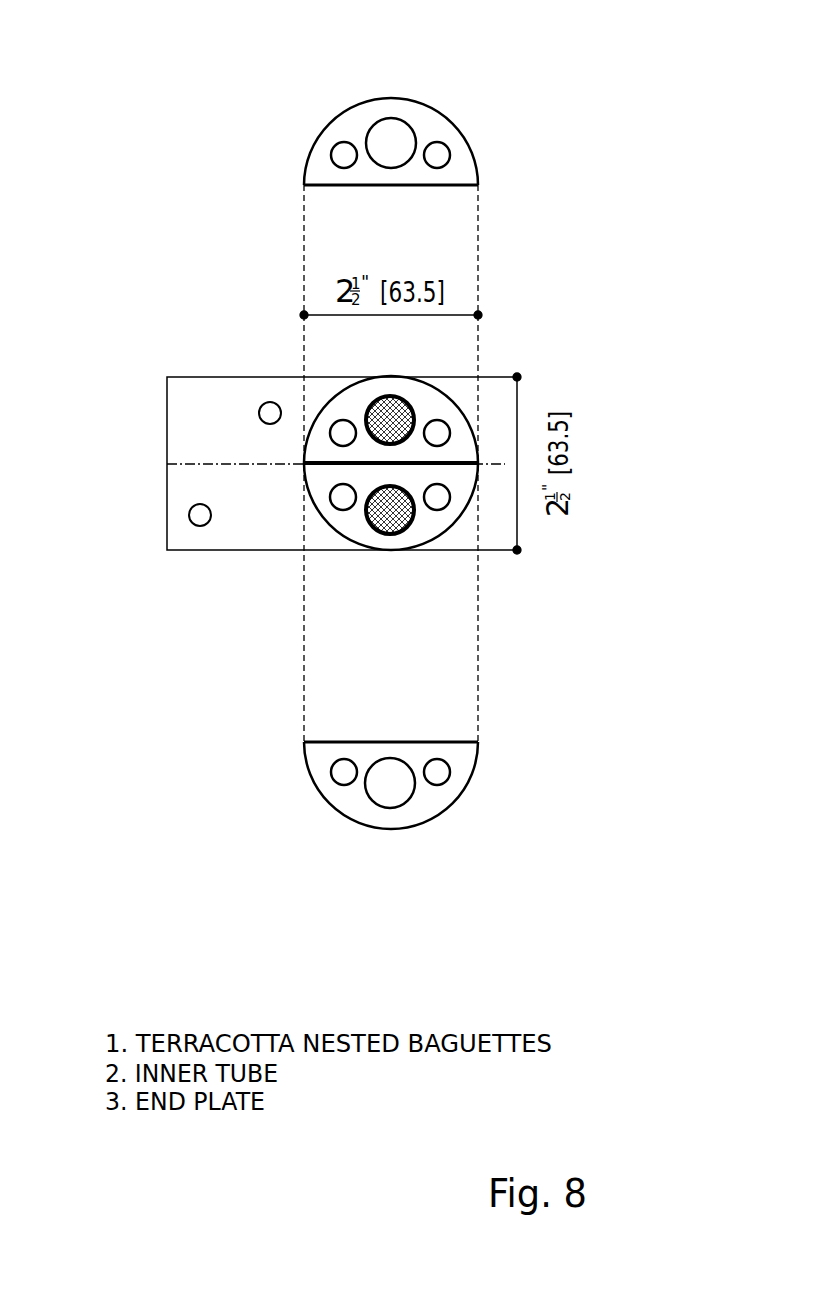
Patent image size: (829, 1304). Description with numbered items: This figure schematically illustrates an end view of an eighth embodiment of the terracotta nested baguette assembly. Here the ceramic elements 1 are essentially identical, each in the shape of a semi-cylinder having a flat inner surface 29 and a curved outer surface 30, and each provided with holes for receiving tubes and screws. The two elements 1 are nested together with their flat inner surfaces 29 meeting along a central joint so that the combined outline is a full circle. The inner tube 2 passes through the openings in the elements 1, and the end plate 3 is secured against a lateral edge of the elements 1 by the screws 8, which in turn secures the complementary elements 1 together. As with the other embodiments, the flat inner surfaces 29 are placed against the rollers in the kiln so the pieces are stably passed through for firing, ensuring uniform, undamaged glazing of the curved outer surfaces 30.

The ceramic element 1 is at (321, 476).
The inner tube 2 is at (304, 483).
The end plate 3 is at (167, 430).
The screw 8 is at (405, 393).
The flat inner surface 29 is at (443, 186).
The curved outer surface 30 is at (441, 116).